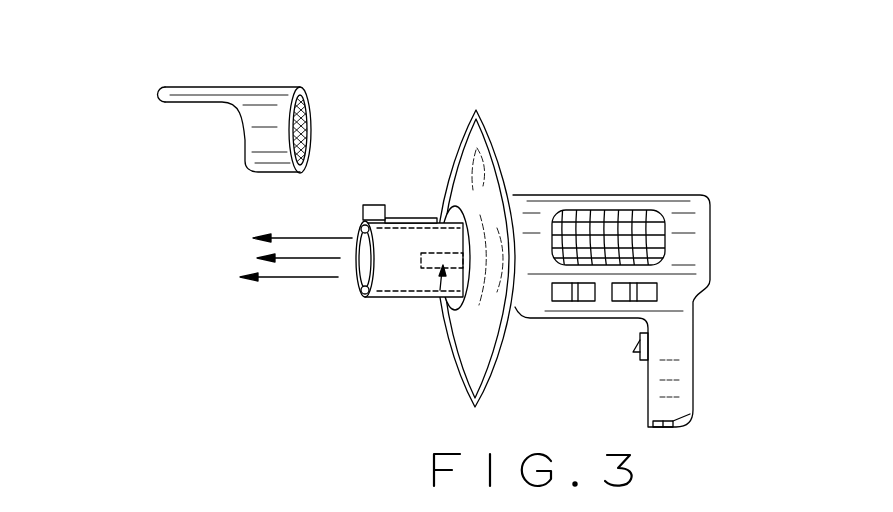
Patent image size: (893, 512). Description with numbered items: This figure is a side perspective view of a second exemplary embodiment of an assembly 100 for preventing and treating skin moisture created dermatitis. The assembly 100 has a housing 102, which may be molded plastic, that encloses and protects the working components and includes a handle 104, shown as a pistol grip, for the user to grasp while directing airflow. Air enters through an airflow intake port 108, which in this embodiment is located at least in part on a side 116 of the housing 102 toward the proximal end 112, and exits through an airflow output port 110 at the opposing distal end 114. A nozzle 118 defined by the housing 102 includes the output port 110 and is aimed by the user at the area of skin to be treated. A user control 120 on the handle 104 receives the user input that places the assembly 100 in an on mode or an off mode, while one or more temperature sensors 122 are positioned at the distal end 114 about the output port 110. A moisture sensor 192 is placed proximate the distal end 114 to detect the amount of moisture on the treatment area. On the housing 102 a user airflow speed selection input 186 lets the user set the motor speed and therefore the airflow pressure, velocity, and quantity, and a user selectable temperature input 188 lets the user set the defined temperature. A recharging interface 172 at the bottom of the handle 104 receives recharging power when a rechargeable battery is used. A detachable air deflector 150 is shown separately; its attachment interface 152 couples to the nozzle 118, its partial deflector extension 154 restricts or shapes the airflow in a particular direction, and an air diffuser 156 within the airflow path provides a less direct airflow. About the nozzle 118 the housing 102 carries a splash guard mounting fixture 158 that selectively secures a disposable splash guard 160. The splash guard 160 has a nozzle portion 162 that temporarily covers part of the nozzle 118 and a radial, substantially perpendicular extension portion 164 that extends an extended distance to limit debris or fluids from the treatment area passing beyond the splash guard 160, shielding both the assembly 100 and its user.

The assembly 100 is at (576, 46).
The housing 102 is at (558, 195).
The handle 104 is at (692, 380).
The airflow intake port 108 is at (640, 221).
The airflow output port 110 is at (358, 282).
The proximal end 112 is at (708, 287).
The distal end 114 is at (366, 300).
The side 116 is at (542, 288).
The nozzle 118 is at (422, 273).
The user control 120 is at (640, 357).
The temperature sensors 122 is at (360, 229).
The air deflector 150 is at (262, 88).
The attachment interface 152 is at (300, 87).
The partial deflector extension 154 is at (208, 92).
The air diffuser 156 is at (305, 114).
The splash guard mounting fixture 158 is at (430, 300).
The disposable splash guard 160 is at (450, 133).
The nozzle portion 162 is at (404, 216).
The extension portion 164 is at (476, 108).
The recharging interface 172 is at (663, 430).
The user airflow speed selection input 186 is at (567, 303).
The user selectable temperature input 188 is at (625, 302).
The moisture sensor 192 is at (368, 205).